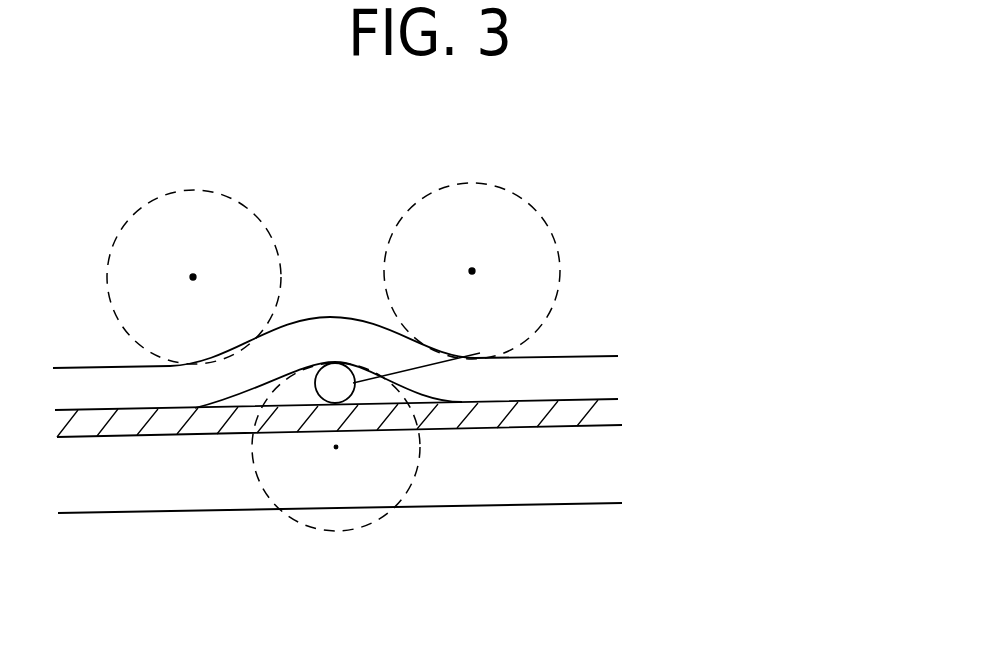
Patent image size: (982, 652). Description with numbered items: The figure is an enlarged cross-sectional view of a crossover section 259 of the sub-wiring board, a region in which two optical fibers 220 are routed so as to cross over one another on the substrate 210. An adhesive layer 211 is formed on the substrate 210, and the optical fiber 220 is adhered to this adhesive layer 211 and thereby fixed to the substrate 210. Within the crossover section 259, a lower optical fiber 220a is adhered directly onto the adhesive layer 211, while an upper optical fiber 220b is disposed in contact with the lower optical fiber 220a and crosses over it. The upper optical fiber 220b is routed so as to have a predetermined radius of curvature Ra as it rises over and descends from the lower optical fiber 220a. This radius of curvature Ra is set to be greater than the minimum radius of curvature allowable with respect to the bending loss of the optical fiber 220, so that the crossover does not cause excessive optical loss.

The crossover section 259 is at (633, 135).
The substrate 210 is at (597, 503).
The adhesive layer 211 is at (610, 418).
The optical fiber 220 is at (774, 242).
The lower optical fiber 220a is at (478, 356).
The upper optical fiber 220b is at (607, 372).
The radius of curvature Ra is at (227, 355).